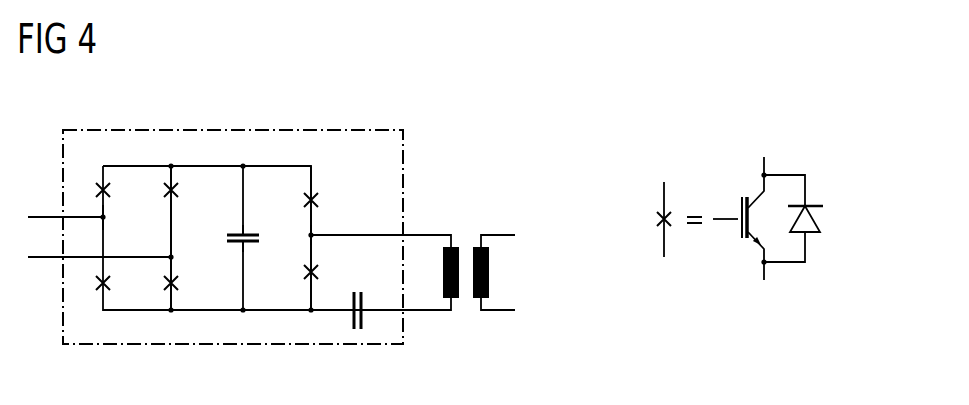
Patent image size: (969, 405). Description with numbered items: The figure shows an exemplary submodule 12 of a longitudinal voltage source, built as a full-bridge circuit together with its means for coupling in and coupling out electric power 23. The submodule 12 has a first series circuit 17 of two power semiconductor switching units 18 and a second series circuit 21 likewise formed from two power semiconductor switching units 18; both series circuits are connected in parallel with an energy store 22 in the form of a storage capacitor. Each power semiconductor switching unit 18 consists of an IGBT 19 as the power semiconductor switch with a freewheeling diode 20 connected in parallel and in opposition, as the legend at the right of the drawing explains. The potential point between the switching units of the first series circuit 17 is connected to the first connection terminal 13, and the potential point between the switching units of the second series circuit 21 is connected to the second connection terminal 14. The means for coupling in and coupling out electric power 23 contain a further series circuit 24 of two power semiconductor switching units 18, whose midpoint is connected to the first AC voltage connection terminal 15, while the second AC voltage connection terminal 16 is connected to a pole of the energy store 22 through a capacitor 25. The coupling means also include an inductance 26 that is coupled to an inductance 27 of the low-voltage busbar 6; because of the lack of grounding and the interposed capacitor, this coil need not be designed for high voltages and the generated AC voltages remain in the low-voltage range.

The low-voltage busbar 6 is at (496, 296).
The submodule 12 is at (375, 128).
The first connection terminal 13 is at (42, 215).
The second connection terminal 14 is at (42, 257).
The first AC voltage connection terminal 15 is at (432, 233).
The second AC voltage connection terminal 16 is at (421, 312).
The first series circuit 17 is at (88, 200).
The power semiconductor switching unit 18 is at (108, 186).
The IGBT 19 is at (738, 208).
The freewheeling diode 20 is at (815, 233).
The second series circuit 21 is at (190, 175).
The energy store 22 is at (257, 245).
The means for coupling in and coupling out electric power 23 is at (326, 150).
The series circuit 24 is at (300, 222).
The capacitor 25 is at (350, 322).
The inductance 26 is at (462, 255).
The inductance 27 is at (491, 270).